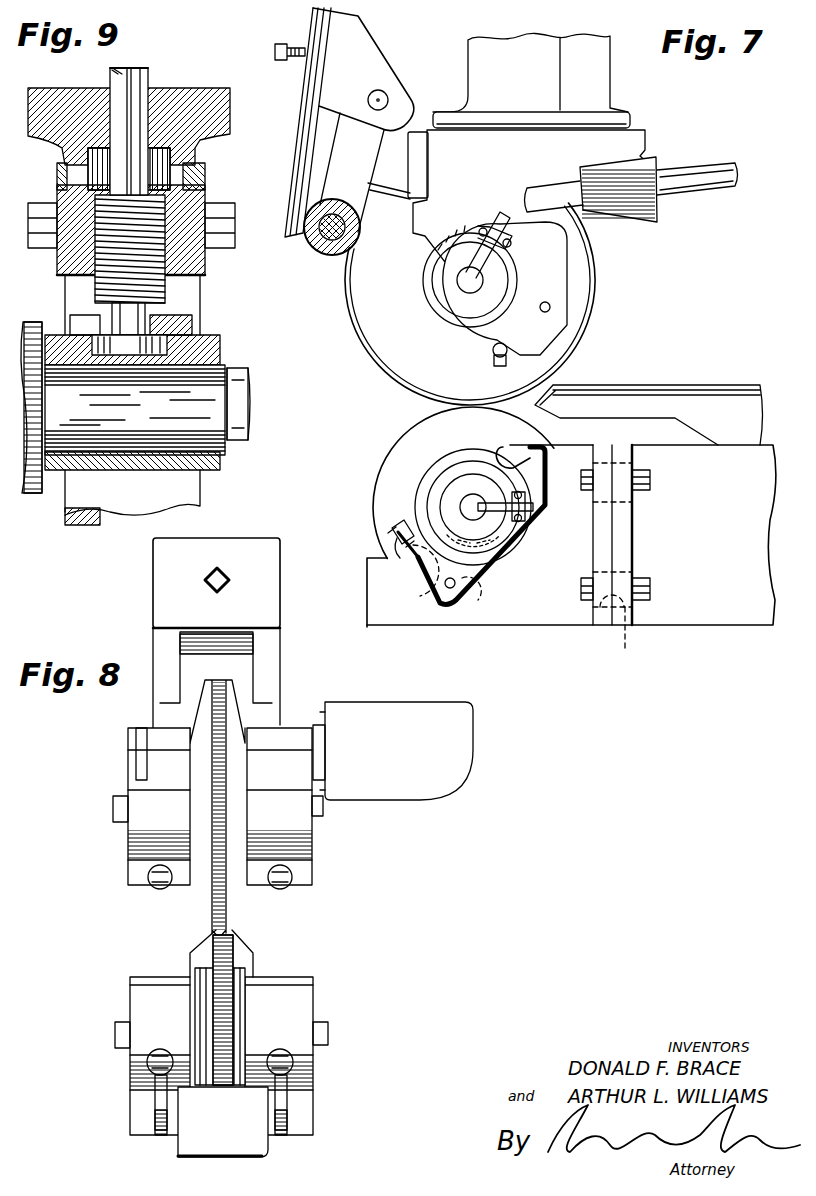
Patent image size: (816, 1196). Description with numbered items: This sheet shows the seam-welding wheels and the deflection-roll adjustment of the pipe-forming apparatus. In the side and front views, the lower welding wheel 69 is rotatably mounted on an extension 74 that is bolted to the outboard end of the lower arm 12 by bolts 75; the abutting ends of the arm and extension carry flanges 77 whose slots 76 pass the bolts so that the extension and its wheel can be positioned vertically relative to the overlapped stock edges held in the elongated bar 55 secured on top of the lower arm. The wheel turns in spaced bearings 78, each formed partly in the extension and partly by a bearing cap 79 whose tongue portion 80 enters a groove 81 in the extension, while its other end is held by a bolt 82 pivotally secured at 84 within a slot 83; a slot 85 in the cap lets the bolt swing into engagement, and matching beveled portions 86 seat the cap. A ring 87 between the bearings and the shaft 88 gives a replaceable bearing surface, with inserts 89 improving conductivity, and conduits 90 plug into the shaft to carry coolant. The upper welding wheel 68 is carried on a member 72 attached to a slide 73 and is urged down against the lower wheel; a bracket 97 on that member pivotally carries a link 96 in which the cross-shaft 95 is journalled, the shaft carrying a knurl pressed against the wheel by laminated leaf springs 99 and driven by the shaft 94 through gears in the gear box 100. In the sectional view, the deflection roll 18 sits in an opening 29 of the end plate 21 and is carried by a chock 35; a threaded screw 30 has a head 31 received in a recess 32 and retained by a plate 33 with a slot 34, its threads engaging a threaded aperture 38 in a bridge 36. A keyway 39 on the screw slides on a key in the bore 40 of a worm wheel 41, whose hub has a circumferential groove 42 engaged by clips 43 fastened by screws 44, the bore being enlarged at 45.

In FIG. 7, the lower arm 12 is at (742, 635).
In FIG. 9, the deflection roll 18 is at (34, 472).
In FIG. 9, the end plate 21 is at (96, 523).
In FIG. 9, the openings 29 is at (182, 492).
In FIG. 9, the threaded screw 30 is at (162, 296).
In FIG. 9, the head 31 is at (166, 343).
In FIG. 9, the recess 32 is at (96, 340).
In FIG. 9, the plate 33 is at (192, 323).
In FIG. 9, the slot 34 is at (90, 320).
In FIG. 9, the chock 35 is at (208, 462).
In FIG. 9, the bridge 36 is at (78, 215).
In FIG. 9, the threaded aperture 38 is at (76, 252).
In FIG. 9, the keyway 39 is at (132, 70).
In FIG. 9, the bore 40 is at (112, 96).
In FIG. 9, the worm wheel 41 is at (197, 96).
In FIG. 9, the circumferential groove 42 is at (200, 166).
In FIG. 9, the clips 43 is at (205, 260).
In FIG. 9, the screws 44 is at (214, 204).
In FIG. 9, the enlarged bore portion 45 is at (96, 166).
In FIG. 7, the elongated bar 55 is at (707, 410).
In FIG. 8, the elongated bar 55 is at (240, 953).
In FIG. 7, the upper welding wheel 68 is at (386, 336).
In FIG. 8, the upper welding wheel 68 is at (212, 890).
In FIG. 7, the lower welding wheel 69 is at (408, 442).
In FIG. 8, the lower welding wheel 69 is at (220, 966).
In FIG. 7, the member 72 is at (562, 248).
In FIG. 7, the slide 73 is at (498, 62).
In FIG. 7, the extension 74 is at (540, 617).
In FIG. 8, the extension 74 is at (237, 1142).
In FIG. 7, the bolts 75 is at (652, 480).
In FIG. 7, the slots 76 is at (625, 615).
In FIG. 7, the flanges 77 is at (601, 532).
In FIG. 7, the bearings 78 is at (545, 543).
In FIG. 8, the bearings 78 is at (154, 968).
In FIG. 7, the bearing cap 79 is at (427, 482).
In FIG. 8, the bearing cap 79 is at (145, 1020).
In FIG. 7, the tongue portion 80 is at (541, 456).
In FIG. 7, the groove 81 is at (510, 465).
In FIG. 7, the bolt 82 is at (395, 530).
In FIG. 8, the bolt 82 is at (155, 1102).
In FIG. 7, the slot 83 is at (475, 592).
In FIG. 8, the slot 83 is at (160, 1137).
In FIG. 7, the pivot 84 is at (449, 590).
In FIG. 7, the slot 85 is at (419, 589).
In FIG. 7, the beveled portions 86 is at (410, 556).
In FIG. 7, the ring 87 is at (463, 466).
In FIG. 7, the shaft 88 is at (455, 488).
In FIG. 8, the shaft 88 is at (114, 1036).
In FIG. 7, the inserts 89 is at (490, 542).
In FIG. 7, the conduits 90 is at (533, 508).
In FIG. 7, the shaft 94 is at (707, 190).
In FIG. 7, the cross-shaft 95 is at (330, 256).
In FIG. 7, the link 96 is at (360, 186).
In FIG. 7, the bracket 97 is at (415, 125).
In FIG. 7, the laminated leaf springs 99 is at (303, 160).
In FIG. 8, the laminated leaf springs 99 is at (165, 674).
In FIG. 8, the gear box 100 is at (456, 745).